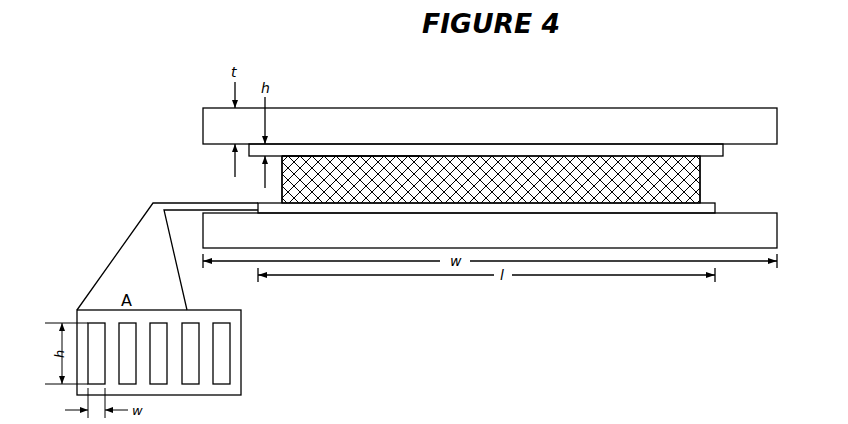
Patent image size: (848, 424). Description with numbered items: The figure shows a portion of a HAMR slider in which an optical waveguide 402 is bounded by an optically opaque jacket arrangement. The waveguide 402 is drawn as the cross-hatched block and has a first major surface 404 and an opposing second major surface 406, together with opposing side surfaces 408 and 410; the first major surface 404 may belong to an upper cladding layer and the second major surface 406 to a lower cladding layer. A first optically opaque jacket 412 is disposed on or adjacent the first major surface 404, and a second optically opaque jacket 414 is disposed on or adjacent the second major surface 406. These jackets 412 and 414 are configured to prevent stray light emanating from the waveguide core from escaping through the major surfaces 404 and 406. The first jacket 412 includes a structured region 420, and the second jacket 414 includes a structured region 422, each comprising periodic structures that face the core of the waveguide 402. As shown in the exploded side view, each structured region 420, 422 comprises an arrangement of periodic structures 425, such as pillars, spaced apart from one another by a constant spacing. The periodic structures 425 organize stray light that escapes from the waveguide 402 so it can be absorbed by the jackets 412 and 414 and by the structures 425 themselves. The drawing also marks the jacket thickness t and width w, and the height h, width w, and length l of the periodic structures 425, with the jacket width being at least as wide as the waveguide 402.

The optical waveguide 402 is at (643, 178).
The first major surface 404 is at (352, 157).
The second major surface 406 is at (352, 187).
The side surface 408 is at (700, 184).
The side surface 410 is at (282, 194).
The first optically opaque jacket 412 is at (730, 107).
The second optically opaque jacket 414 is at (738, 250).
The structured region 420 is at (512, 148).
The structured region 422 is at (525, 214).
The periodic structures 425 is at (229, 356).